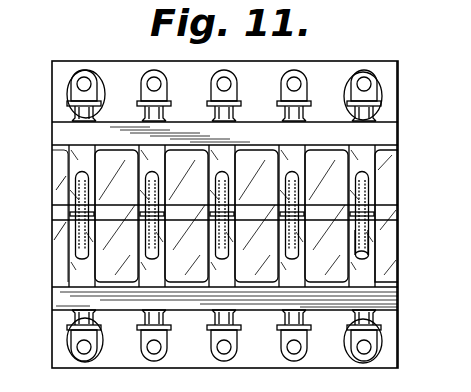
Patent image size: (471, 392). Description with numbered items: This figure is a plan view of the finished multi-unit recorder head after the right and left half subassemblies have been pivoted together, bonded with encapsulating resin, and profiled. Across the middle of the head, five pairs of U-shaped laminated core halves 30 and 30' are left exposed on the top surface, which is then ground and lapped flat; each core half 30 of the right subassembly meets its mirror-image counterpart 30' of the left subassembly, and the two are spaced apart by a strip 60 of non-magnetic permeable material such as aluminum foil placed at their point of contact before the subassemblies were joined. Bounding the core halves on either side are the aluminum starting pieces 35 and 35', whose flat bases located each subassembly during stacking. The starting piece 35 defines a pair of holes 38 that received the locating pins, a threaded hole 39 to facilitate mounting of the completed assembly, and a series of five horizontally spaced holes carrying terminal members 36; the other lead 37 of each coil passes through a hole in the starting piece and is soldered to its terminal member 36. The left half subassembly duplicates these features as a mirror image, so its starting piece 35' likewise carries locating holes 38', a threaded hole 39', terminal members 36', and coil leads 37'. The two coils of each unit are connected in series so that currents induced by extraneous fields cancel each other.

The laminated core half 30 is at (249, 216).
The laminated core half 30' is at (393, 242).
The starting piece 35 is at (240, 133).
The starting piece 35' is at (242, 298).
The terminal member 36 is at (388, 93).
The terminal member 36' is at (368, 351).
The coil lead 37 is at (386, 96).
The coil lead 37' is at (388, 341).
The hole 38 is at (63, 95).
The hole 38' is at (59, 336).
The threaded hole 39 is at (213, 95).
The threaded hole 39' is at (210, 335).
The non-magnetic permeable strip 60 is at (375, 219).